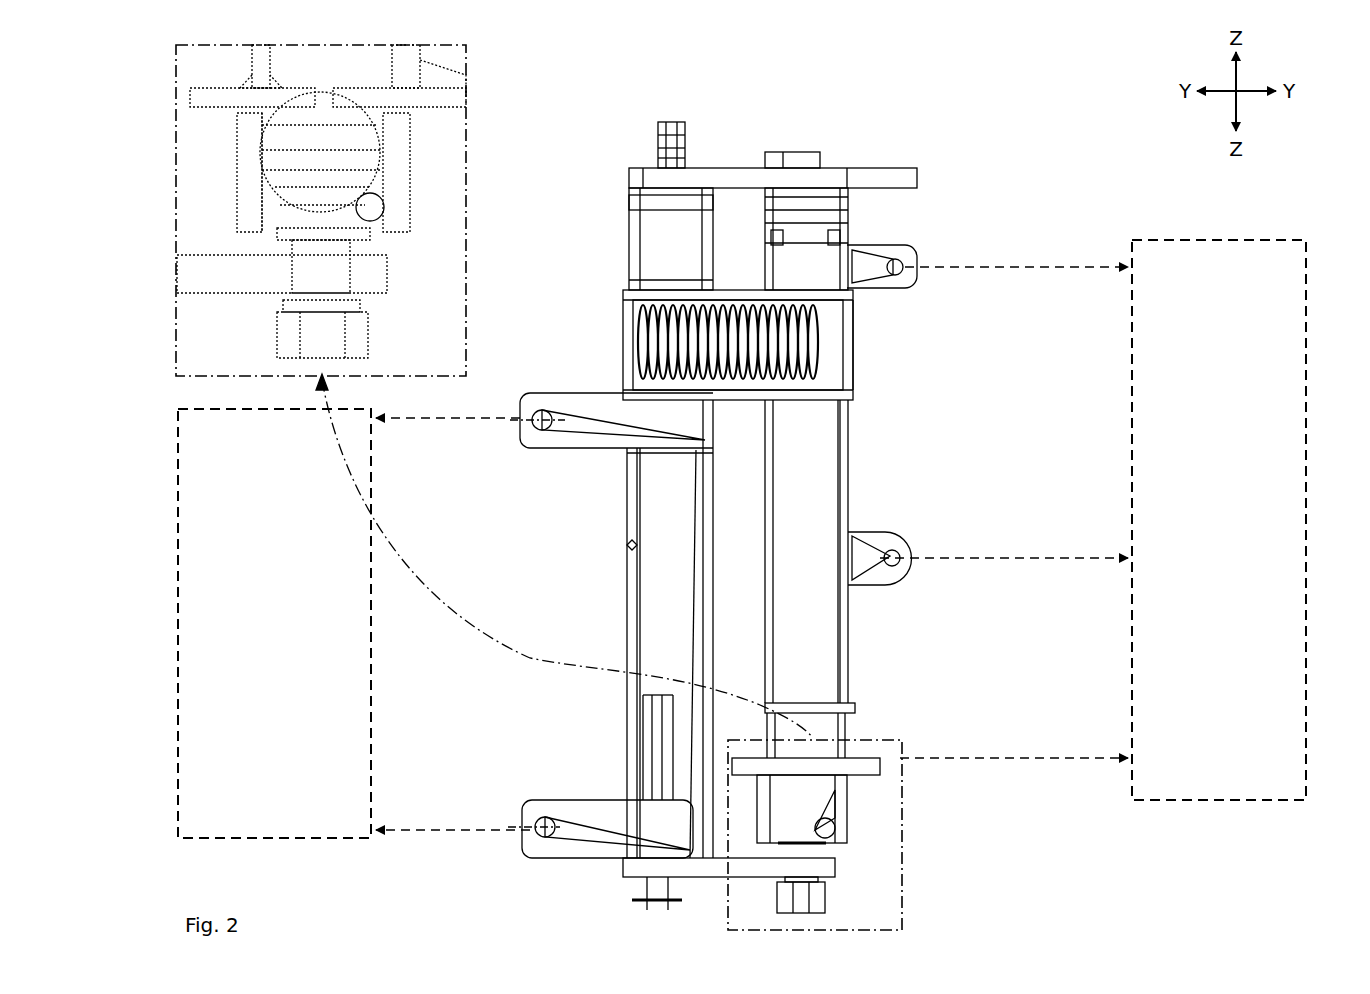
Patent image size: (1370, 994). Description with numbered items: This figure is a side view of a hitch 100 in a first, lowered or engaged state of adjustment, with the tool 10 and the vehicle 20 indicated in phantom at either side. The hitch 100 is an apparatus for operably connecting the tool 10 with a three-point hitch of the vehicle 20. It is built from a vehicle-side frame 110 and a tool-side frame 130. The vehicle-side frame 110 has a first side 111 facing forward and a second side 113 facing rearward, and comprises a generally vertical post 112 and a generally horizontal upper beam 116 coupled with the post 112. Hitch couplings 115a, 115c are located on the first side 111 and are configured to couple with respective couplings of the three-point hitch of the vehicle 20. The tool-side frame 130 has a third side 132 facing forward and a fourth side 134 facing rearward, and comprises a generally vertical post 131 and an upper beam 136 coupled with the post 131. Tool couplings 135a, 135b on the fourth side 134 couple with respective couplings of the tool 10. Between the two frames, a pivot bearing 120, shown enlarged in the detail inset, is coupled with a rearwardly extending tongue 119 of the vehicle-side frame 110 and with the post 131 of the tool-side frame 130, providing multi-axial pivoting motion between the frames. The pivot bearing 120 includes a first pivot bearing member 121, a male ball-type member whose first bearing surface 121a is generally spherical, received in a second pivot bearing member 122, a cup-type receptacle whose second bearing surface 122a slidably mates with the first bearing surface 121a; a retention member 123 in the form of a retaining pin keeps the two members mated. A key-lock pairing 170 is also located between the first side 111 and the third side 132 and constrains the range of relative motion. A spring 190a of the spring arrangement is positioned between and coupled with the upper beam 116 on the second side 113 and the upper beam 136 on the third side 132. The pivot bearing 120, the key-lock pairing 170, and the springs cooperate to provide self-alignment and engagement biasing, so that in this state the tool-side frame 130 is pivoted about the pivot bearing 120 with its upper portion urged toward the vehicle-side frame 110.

The tool 10 is at (1219, 520).
The vehicle 20 is at (274, 623).
The hitch 100 is at (728, 118).
The vehicle-side frame 110 is at (546, 351).
The first side 111 is at (626, 501).
The post 112 is at (655, 612).
The second side 113 is at (715, 536).
The hitch coupling 115a is at (551, 797).
The hitch coupling 115c is at (531, 451).
The upper beam 116 is at (625, 322).
The tongue 119 is at (740, 878).
The pivot bearing 120 is at (231, 119).
The first pivot bearing member 121 is at (319, 95).
The first bearing surface 121a is at (268, 122).
The second pivot bearing member 122 is at (234, 185).
The second bearing surface 122a is at (262, 180).
The retention member 123 is at (368, 222).
The tool-side frame 130 is at (867, 623).
The post 131 is at (822, 522).
The third side 132 is at (759, 634).
The fourth side 134 is at (849, 477).
The tool coupling 135a is at (905, 290).
The tool coupling 135b is at (905, 578).
The upper beam 136 is at (855, 358).
The key-lock pairing 170 is at (822, 161).
The spring 190a is at (712, 375).